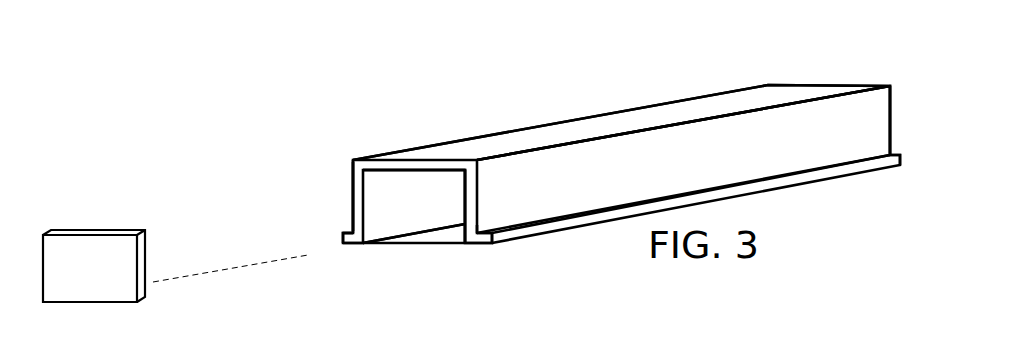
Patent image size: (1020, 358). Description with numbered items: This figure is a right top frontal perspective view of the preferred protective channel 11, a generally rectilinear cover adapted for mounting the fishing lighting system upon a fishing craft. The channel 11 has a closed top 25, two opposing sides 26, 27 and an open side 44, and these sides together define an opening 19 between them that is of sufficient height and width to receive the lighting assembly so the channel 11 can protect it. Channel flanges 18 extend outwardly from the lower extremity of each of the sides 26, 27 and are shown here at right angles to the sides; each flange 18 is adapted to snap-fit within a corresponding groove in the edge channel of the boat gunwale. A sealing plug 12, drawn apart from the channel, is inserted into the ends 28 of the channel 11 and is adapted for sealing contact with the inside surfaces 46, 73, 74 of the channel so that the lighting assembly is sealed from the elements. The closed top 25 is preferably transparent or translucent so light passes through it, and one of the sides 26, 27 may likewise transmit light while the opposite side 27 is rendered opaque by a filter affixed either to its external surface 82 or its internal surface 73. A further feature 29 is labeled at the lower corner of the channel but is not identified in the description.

The protective channel 11 is at (608, 127).
The sealing plug 12 is at (83, 243).
The channel flanges 18 is at (342, 237).
The opening 19 is at (420, 224).
The closed top 25 is at (688, 113).
The side 26 is at (802, 145).
The opposite side 27 is at (352, 208).
The ends 28 is at (875, 85).
The lower corner 29 is at (348, 232).
The open side 44 is at (408, 243).
The inside surface 46 is at (440, 173).
The internal surface 73 is at (413, 215).
The inside surface 74 is at (464, 207).
The external surface 82 is at (352, 183).